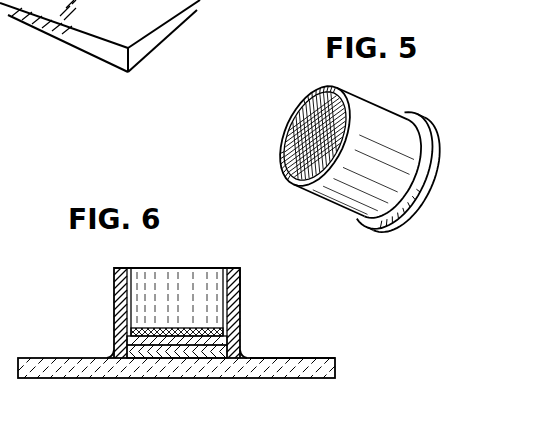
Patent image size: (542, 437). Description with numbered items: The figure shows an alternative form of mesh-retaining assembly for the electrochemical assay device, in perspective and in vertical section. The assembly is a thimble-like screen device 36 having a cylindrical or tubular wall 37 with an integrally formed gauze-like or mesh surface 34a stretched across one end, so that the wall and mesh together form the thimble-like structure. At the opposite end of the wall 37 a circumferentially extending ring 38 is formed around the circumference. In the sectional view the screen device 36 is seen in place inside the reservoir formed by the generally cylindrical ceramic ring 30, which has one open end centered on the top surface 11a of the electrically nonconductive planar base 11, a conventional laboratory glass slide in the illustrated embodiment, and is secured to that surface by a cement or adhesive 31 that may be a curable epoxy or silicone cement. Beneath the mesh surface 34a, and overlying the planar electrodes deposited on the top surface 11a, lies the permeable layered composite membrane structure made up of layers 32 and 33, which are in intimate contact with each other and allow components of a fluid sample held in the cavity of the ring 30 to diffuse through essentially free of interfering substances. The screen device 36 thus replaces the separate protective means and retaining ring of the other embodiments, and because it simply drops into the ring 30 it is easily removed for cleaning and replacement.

In FIG. 6, the base surface 11 is at (215, 366).
In FIG. 6, the top surface of the base 11a is at (313, 358).
In FIG. 6, the ceramic ring 30 is at (114, 300).
In FIG. 6, the cement or adhesive 31 is at (110, 353).
In FIG. 6, the membrane layer 32 is at (140, 346).
In FIG. 6, the membrane layer 33 is at (162, 348).
In FIG. 5, the mesh surface 34a is at (318, 116).
In FIG. 6, the mesh surface 34a is at (193, 328).
In FIG. 5, the thimble-like screen device 36 is at (374, 99).
In FIG. 6, the thimble-like screen device 36 is at (138, 267).
In FIG. 5, the tubular wall 37 is at (349, 224).
In FIG. 6, the tubular wall 37 is at (134, 296).
In FIG. 5, the circumferentially extending ring 38 is at (405, 118).
In FIG. 6, the circumferentially extending ring 38 is at (232, 268).